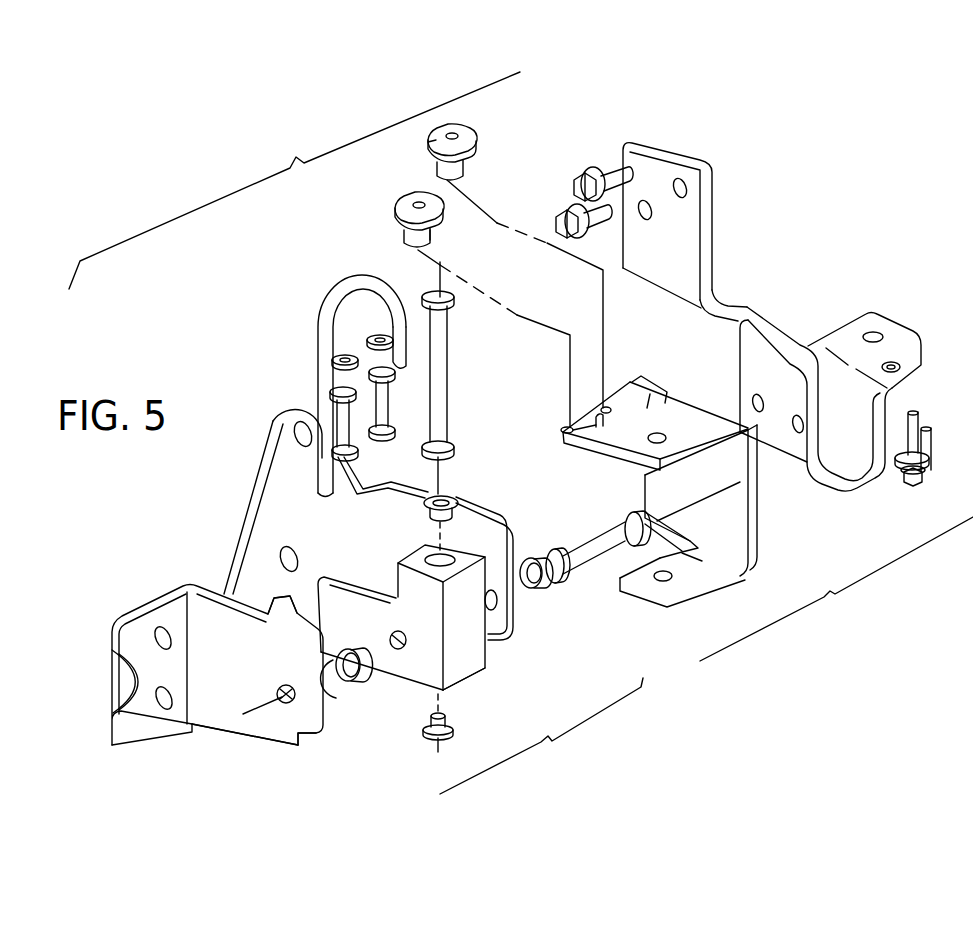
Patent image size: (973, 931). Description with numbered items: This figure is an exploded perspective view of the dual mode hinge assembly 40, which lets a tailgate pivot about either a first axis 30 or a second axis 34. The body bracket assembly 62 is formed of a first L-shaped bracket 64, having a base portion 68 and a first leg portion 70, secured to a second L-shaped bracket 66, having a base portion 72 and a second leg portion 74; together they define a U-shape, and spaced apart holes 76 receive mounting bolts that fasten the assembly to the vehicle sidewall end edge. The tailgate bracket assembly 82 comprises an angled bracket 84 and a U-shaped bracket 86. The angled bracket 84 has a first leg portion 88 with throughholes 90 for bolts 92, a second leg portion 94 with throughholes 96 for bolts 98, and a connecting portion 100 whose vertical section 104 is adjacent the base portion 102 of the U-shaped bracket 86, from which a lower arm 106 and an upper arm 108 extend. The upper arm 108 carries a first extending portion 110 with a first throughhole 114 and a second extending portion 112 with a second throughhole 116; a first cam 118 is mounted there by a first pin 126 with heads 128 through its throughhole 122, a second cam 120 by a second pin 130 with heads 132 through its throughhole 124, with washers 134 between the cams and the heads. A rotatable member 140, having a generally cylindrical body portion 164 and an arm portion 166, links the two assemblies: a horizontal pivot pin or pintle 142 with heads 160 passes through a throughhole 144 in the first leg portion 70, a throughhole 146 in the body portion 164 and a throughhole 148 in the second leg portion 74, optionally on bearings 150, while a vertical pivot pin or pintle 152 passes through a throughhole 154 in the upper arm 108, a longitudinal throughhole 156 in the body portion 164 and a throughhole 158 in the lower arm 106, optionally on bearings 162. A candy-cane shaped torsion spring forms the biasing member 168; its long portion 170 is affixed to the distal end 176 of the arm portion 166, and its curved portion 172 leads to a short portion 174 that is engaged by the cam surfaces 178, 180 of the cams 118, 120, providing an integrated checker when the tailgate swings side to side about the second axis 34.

The first axis 30 is at (258, 703).
The second axis 34 is at (441, 262).
The dual mode hinge assembly 40 is at (294, 180).
The body bracket assembly 62 is at (541, 736).
The first bracket 64 is at (223, 712).
The second bracket 66 is at (247, 501).
The base portion 68 is at (221, 672).
The first leg portion 70 is at (299, 746).
The base portion 72 is at (284, 455).
The second leg portion 74 is at (455, 562).
The holes 76 is at (284, 558).
The tailgate bracket assembly 82 is at (744, 385).
The angled bracket 84 is at (771, 300).
The U-shaped bracket 86 is at (731, 515).
The first leg portion 88 is at (888, 338).
The throughholes 90 is at (900, 364).
The bolts 92 is at (920, 420).
The second leg portion 94 is at (687, 208).
The throughholes 96 is at (688, 182).
The bolts 98 is at (620, 168).
The connecting portion 100 is at (794, 335).
The base portion 102 is at (751, 500).
The vertical section 104 is at (739, 356).
The lower arm 106 is at (694, 597).
The upper arm 108 is at (632, 415).
The first extending portion 110 is at (561, 431).
The second extending portion 112 is at (598, 420).
The first throughhole 114 is at (567, 427).
The second throughhole 116 is at (608, 407).
The first cam 118 is at (390, 207).
The second cam 120 is at (461, 136).
The throughhole 122 is at (416, 200).
The throughhole 124 is at (458, 131).
The first pin 126 is at (367, 436).
The heads 128 is at (356, 456).
The second pin 130 is at (434, 404).
The heads 132 is at (397, 428).
The washers 134 is at (370, 340).
The rotatable member 140 is at (428, 603).
The horizontal pivot pin 142 is at (590, 545).
The throughhole 144 is at (285, 704).
The throughhole 146 is at (396, 650).
The throughhole 148 is at (497, 603).
The bearings 150 is at (352, 682).
The vertical pivot pin 152 is at (446, 370).
The throughhole 154 is at (661, 434).
The throughhole 156 is at (446, 548).
The throughhole 158 is at (667, 582).
The heads 160 is at (448, 303).
The bearings 162 is at (444, 495).
The body portion 164 is at (458, 690).
The arm portion 166 is at (336, 626).
The biasing member 168 is at (321, 322).
The long portion 170 is at (322, 387).
The curved portion 172 is at (326, 375).
The short portion 174 is at (394, 323).
The distal end 176 is at (307, 627).
The cam surface 178 is at (443, 217).
The cam surface 180 is at (430, 145).